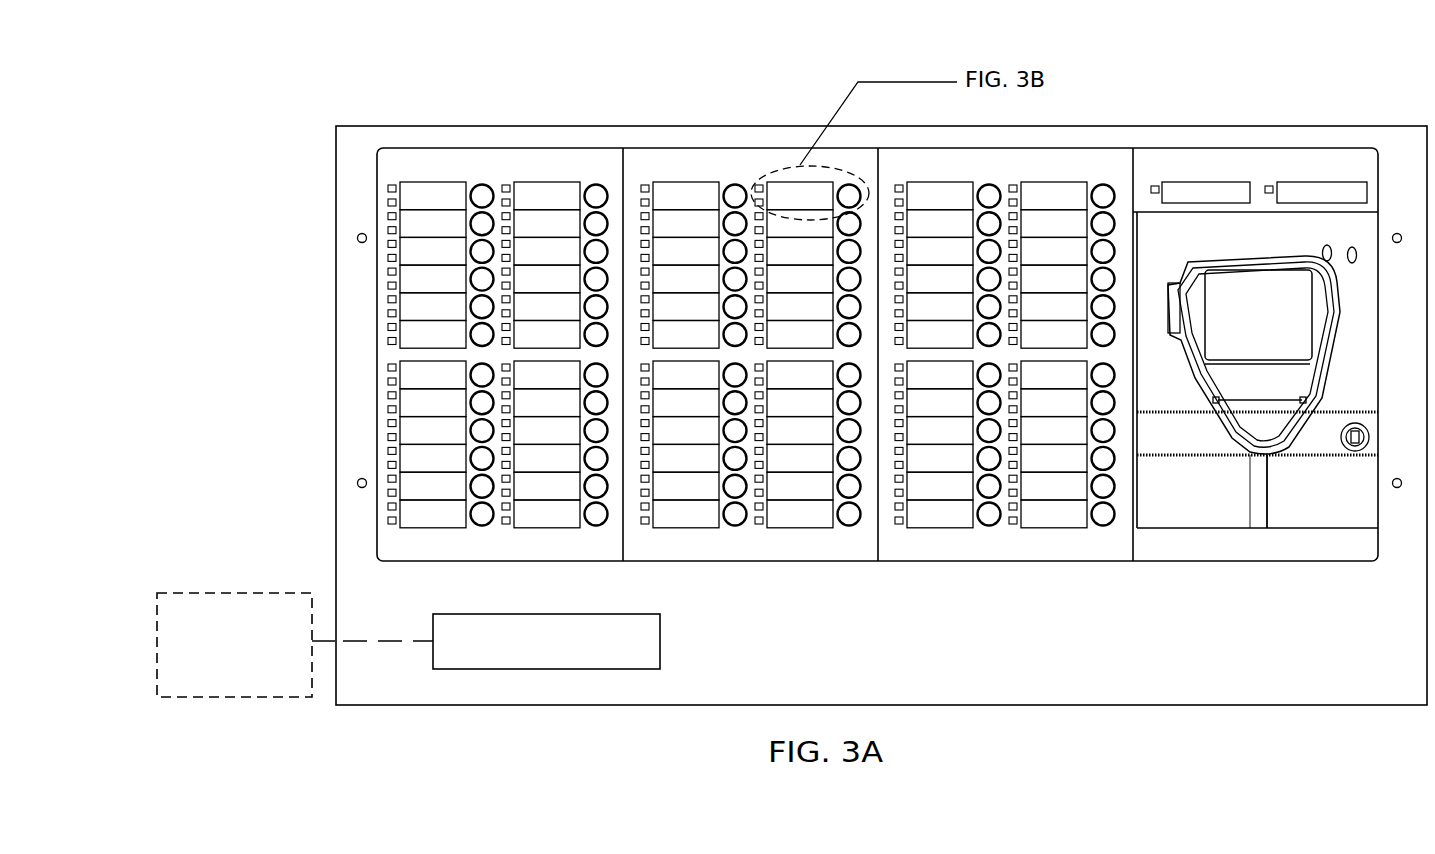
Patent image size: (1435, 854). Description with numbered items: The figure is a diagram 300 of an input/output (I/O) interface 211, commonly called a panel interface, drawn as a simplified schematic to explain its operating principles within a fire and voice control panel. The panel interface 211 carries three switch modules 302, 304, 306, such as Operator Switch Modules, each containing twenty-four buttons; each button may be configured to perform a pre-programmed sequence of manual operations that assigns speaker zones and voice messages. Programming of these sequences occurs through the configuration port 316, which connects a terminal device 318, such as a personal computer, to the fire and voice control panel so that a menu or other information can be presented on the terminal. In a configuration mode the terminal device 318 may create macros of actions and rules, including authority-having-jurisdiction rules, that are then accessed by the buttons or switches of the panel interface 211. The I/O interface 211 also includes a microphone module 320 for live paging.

The diagram 300 is at (427, 54).
The input/output (I/O) interface 211 is at (1375, 691).
The switch module 302 is at (537, 167).
The switch module 304 is at (707, 167).
The switch module 306 is at (1047, 163).
The configuration port 316 is at (486, 641).
The terminal device 318 is at (215, 666).
The microphone module 320 is at (1262, 328).